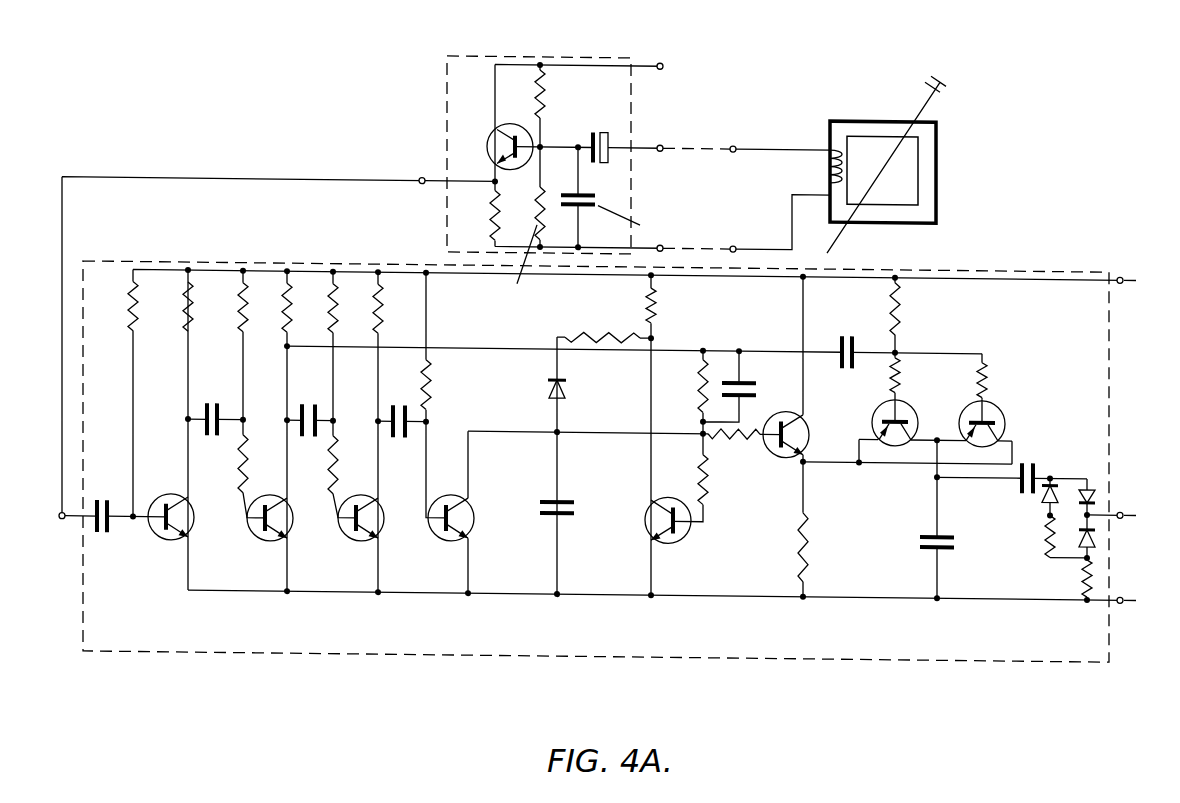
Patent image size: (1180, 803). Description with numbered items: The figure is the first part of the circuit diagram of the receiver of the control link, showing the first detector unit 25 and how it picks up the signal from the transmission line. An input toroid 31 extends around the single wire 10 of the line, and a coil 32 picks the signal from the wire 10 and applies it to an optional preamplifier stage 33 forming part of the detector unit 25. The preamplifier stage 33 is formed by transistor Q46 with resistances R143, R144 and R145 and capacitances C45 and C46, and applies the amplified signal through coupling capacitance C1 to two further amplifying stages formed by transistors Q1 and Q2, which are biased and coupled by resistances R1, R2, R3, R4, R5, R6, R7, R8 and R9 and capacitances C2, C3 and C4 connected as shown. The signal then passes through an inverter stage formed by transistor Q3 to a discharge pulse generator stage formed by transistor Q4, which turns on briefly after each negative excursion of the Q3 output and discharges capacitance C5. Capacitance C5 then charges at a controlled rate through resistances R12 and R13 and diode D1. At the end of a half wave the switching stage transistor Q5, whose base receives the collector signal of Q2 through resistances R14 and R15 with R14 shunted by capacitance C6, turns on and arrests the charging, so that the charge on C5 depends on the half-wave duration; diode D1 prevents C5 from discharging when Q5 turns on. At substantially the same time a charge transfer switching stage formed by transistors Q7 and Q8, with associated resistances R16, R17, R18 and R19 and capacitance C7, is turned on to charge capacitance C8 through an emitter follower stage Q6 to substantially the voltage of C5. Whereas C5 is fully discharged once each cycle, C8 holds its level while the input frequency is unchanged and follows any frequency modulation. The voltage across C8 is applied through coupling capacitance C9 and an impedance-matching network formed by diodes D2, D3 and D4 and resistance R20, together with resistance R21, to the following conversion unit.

The wire 10 is at (915, 100).
The first detector unit 25 is at (112, 254).
The input toroid 31 is at (930, 168).
The coil 32 is at (825, 166).
The preamplifier stage 33 is at (447, 78).
The resistance R143 is at (535, 91).
The transistor Q46 is at (487, 137).
The resistance R144 is at (495, 190).
The capacitance C45 is at (606, 133).
The resistance R145 is at (540, 188).
The capacitance C46 is at (598, 189).
The resistance R1 is at (138, 281).
The resistance R2 is at (193, 281).
The resistance R3 is at (245, 281).
The resistance R4 is at (242, 468).
The resistance R5 is at (290, 281).
The resistance R6 is at (336, 281).
The resistance R7 is at (333, 477).
The resistance R8 is at (380, 281).
The resistance R9 is at (430, 356).
The resistance R12 is at (657, 293).
The resistance R13 is at (605, 328).
The resistance R14 is at (702, 367).
The resistance R15 is at (707, 489).
The resistance R16 is at (782, 547).
The resistance R17 is at (893, 300).
The resistance R18 is at (897, 355).
The resistance R19 is at (985, 349).
The resistance R20 is at (1043, 532).
The resistance R21 is at (1082, 578).
The coupling capacitance C1 is at (100, 497).
The capacitance C2 is at (205, 408).
The capacitance C3 is at (300, 408).
The capacitance C4 is at (390, 408).
The capacitance C5 is at (565, 509).
The capacitance C6 is at (730, 372).
The capacitance C7 is at (847, 328).
The capacitance C8 is at (918, 532).
The coupling capacitance C9 is at (1040, 455).
The diode D1 is at (563, 379).
The diode D2 is at (1042, 484).
The diode D3 is at (1093, 486).
The diode D4 is at (1093, 525).
The transistor Q1 is at (165, 495).
The transistor Q2 is at (265, 537).
The transistor Q3 is at (357, 537).
The transistor Q4 is at (475, 519).
The transistor Q5 is at (665, 537).
The transistor Q6 is at (807, 421).
The transistor Q7 is at (885, 437).
The transistor Q8 is at (1005, 419).